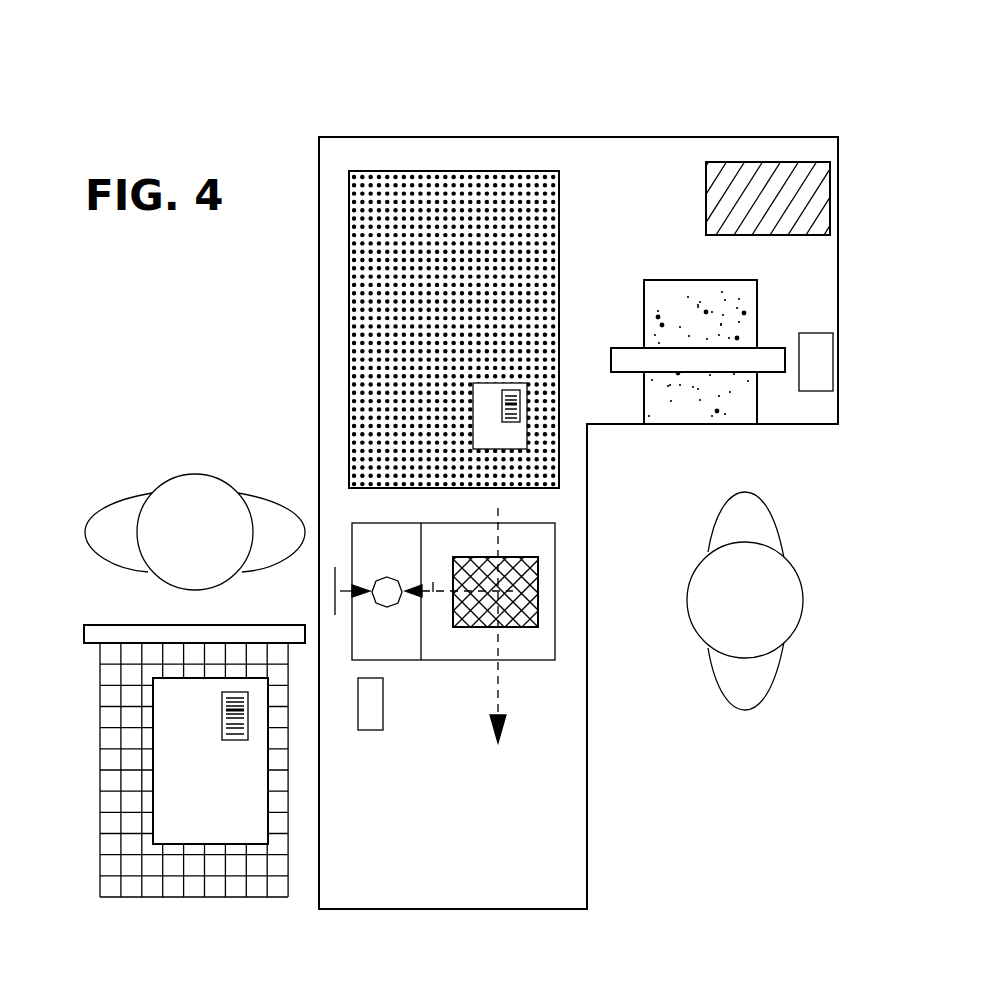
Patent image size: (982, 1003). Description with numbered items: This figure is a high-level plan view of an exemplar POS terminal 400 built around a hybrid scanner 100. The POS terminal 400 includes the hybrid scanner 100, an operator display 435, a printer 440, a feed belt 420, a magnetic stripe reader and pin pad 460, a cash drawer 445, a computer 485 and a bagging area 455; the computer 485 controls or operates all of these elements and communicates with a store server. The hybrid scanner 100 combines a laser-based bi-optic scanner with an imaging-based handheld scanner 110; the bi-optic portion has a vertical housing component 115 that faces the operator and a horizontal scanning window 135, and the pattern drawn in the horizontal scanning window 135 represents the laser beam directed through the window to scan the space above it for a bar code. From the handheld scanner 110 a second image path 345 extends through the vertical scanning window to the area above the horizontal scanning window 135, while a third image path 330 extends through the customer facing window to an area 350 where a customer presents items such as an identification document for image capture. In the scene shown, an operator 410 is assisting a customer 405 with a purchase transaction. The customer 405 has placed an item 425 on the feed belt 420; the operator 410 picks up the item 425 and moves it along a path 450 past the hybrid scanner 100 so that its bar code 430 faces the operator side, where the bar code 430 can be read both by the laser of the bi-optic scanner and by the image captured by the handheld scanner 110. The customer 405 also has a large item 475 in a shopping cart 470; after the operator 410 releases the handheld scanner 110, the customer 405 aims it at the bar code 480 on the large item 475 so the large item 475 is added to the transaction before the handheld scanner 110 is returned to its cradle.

The POS terminal 400 is at (768, 97).
The customer 405 is at (165, 505).
The operator 410 is at (773, 620).
The feed belt 420 is at (415, 171).
The item 425 is at (502, 433).
The bar code 430 is at (522, 394).
The operator display 435 is at (772, 352).
The printer 440 is at (817, 357).
The cash drawer 445 is at (758, 405).
The path 450 is at (498, 680).
The bagging area 455 is at (520, 872).
The magnetic stripe reader and pin pad 460 is at (370, 722).
The shopping cart 470 is at (140, 862).
The large item 475 is at (210, 788).
The bar code 480 is at (222, 712).
The computer 485 is at (830, 178).
The hybrid scanner 100 is at (555, 628).
The handheld scanner 110 is at (388, 597).
The vertical housing component 115 is at (382, 540).
The horizontal scanning window 135 is at (523, 572).
The third image path 330 is at (340, 586).
The second image path 345 is at (433, 590).
The area 350 is at (340, 591).